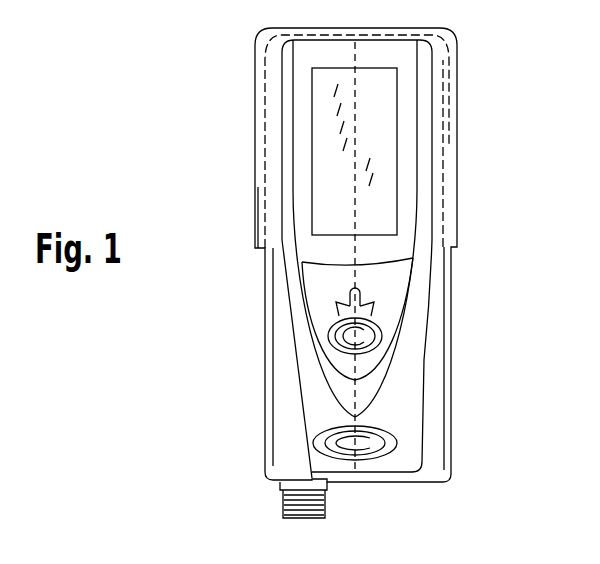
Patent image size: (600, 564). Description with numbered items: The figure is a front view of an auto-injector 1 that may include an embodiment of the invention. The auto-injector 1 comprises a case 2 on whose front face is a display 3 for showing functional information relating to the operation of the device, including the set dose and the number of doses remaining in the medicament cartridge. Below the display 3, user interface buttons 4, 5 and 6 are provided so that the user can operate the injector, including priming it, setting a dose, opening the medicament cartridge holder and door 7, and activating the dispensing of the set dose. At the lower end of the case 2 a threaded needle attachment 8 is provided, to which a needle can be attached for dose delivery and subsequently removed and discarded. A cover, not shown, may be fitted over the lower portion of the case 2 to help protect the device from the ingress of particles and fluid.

The auto-injector 1 is at (231, 364).
The case 2 is at (445, 155).
The display 3 is at (345, 150).
The user interface button 4 is at (328, 285).
The user interface button 5 is at (385, 287).
The user interface button 6 is at (360, 337).
The medicament cartridge holder and door 7 is at (287, 429).
The threaded needle attachment 8 is at (278, 500).